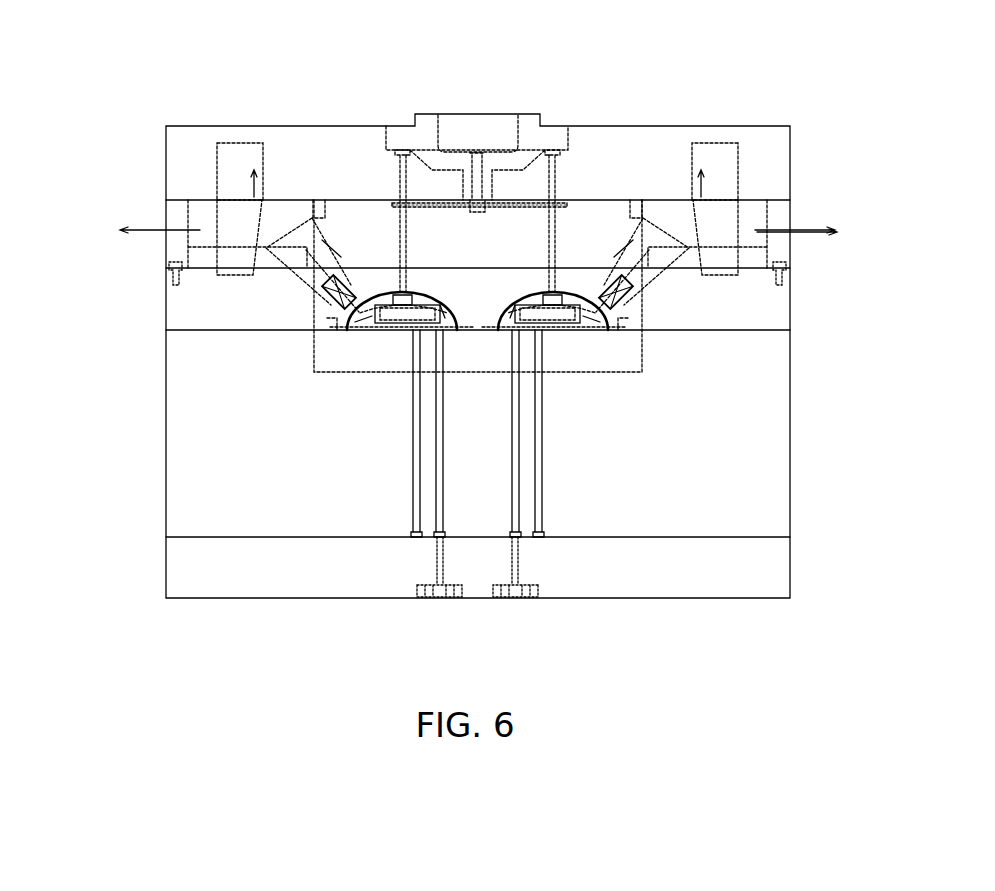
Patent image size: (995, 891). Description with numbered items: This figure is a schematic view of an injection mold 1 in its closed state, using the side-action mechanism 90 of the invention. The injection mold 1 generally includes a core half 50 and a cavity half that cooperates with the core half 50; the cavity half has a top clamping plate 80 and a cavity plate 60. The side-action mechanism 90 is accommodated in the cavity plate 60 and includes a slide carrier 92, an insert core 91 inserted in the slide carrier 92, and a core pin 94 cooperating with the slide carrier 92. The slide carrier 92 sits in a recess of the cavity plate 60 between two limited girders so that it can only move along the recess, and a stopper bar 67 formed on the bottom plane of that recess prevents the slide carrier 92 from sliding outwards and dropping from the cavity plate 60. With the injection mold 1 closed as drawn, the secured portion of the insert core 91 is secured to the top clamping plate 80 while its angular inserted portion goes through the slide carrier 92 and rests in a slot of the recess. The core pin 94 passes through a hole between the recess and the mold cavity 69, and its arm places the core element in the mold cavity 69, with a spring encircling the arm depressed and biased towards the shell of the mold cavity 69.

The injection mold 1 is at (267, 40).
The top clamping plate 80 is at (795, 163).
The cavity plate 60 is at (795, 268).
The core half 50 is at (795, 385).
The side-action mechanism 90 is at (88, 158).
The insert core 91 is at (225, 157).
The slide carrier 92 is at (203, 218).
The core pin 94 is at (268, 250).
The stopper bar 67 is at (170, 266).
The mold cavity 69 is at (347, 318).